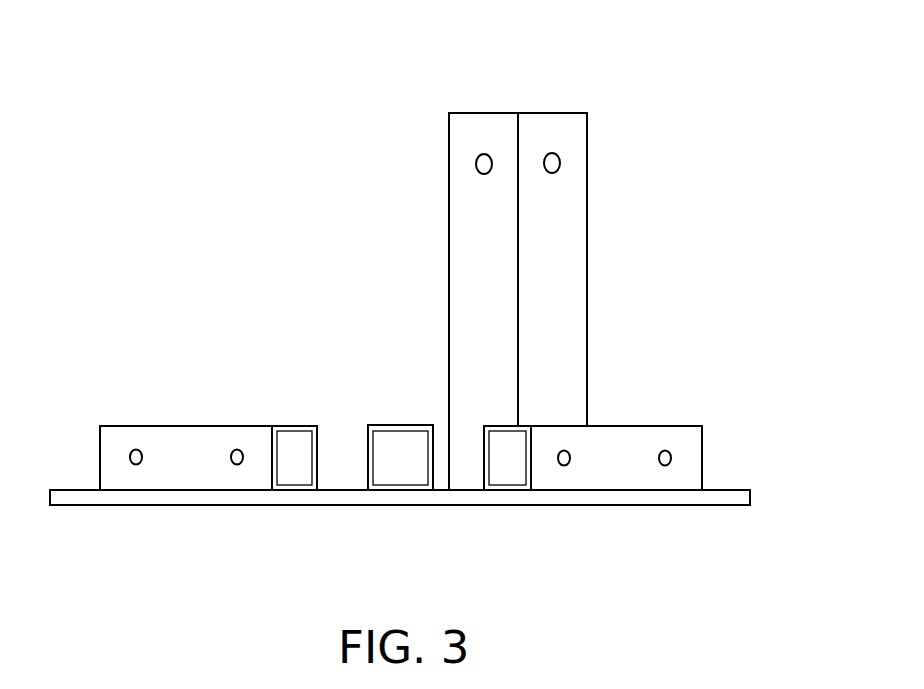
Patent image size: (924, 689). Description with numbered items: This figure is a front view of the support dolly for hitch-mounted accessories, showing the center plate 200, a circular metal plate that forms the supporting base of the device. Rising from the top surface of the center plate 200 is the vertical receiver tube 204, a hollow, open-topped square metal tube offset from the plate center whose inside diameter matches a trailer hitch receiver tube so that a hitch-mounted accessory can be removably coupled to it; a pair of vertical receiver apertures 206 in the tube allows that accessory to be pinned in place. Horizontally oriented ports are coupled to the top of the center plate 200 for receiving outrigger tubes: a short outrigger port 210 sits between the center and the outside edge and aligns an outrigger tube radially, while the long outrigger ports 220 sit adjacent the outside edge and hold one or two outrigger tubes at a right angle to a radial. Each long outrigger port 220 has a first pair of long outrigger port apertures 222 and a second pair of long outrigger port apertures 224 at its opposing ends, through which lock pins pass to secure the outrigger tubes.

The center plate 200 is at (753, 493).
The vertical receiver tube 204 is at (547, 112).
The vertical receiver apertures 206 is at (484, 174).
The short outrigger ports 210 is at (397, 425).
The long outrigger ports 220 is at (208, 426).
The first pair of long outrigger port apertures 222 is at (133, 463).
The second pair of long outrigger port apertures 224 is at (237, 463).